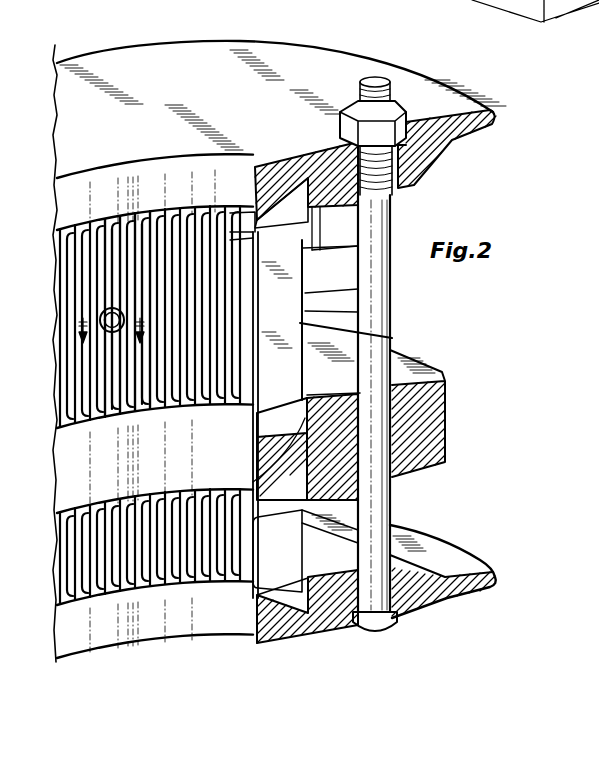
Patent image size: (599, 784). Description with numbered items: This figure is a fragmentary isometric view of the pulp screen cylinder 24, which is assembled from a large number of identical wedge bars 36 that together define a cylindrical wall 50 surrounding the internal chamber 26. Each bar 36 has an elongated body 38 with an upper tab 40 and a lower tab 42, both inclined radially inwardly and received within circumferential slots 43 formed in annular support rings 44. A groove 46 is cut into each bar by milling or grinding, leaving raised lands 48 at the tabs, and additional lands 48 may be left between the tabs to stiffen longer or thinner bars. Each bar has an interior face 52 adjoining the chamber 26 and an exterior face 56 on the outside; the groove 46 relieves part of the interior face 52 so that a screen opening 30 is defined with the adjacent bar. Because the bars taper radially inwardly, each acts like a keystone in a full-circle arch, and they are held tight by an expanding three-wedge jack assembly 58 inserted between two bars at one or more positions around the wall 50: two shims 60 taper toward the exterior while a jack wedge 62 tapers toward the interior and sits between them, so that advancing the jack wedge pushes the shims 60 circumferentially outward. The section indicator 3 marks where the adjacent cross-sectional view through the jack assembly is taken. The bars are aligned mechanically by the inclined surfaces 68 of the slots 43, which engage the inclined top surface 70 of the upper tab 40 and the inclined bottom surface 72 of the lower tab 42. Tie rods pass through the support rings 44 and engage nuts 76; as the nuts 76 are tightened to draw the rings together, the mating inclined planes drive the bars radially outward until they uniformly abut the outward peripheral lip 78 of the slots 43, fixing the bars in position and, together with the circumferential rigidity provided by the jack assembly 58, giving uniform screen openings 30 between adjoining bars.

The section line 3- 3 is at (111, 318).
The screen cylinder 24 is at (433, 78).
The internal chamber 26 is at (157, 162).
The screen opening 30 is at (185, 408).
The wedge bar 36 is at (355, 289).
The elongated body 38 is at (358, 312).
The upper tab 40 is at (310, 185).
The lower tab 42 is at (330, 397).
The circumferential slot 43 is at (247, 235).
The annular support ring 44 is at (437, 158).
The groove 46 is at (303, 248).
The raised land 48 is at (303, 272).
The cylindrical wall 50 is at (152, 425).
The interior face 52 is at (258, 377).
The exterior face 56 is at (392, 338).
The jack assembly 58 is at (115, 425).
The shim 60 is at (96, 426).
The jack wedge 62 is at (100, 216).
The inclined surface 68 is at (283, 186).
The inclined top surface 70 is at (252, 176).
The inclined bottom surface 72 is at (262, 433).
The nut 76 is at (395, 103).
The outward peripheral lip 78 is at (312, 230).